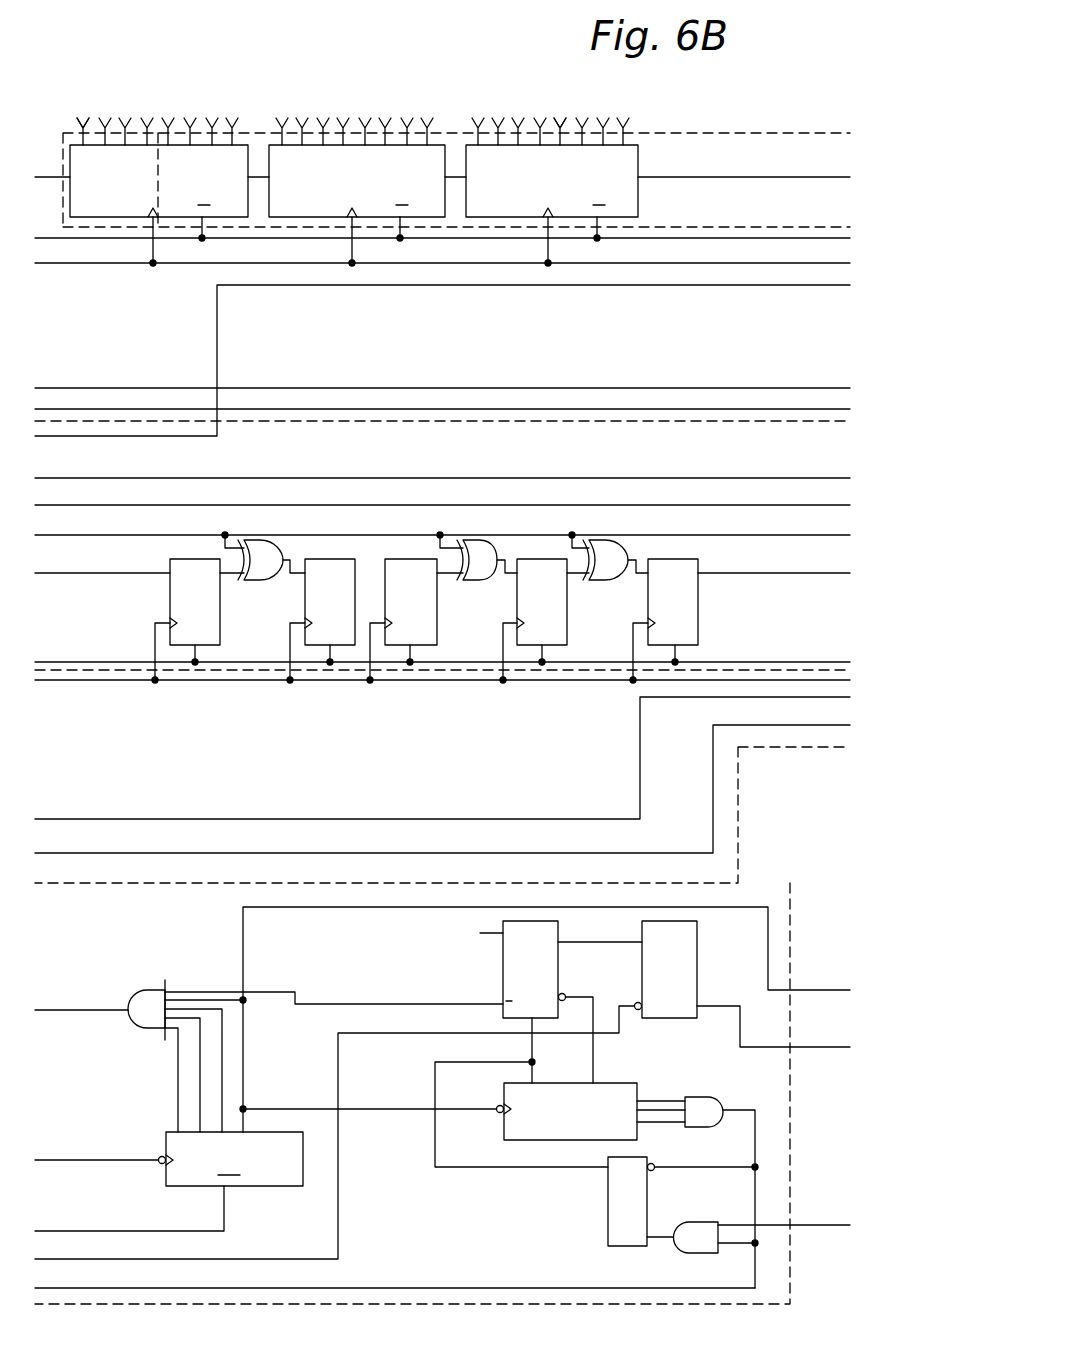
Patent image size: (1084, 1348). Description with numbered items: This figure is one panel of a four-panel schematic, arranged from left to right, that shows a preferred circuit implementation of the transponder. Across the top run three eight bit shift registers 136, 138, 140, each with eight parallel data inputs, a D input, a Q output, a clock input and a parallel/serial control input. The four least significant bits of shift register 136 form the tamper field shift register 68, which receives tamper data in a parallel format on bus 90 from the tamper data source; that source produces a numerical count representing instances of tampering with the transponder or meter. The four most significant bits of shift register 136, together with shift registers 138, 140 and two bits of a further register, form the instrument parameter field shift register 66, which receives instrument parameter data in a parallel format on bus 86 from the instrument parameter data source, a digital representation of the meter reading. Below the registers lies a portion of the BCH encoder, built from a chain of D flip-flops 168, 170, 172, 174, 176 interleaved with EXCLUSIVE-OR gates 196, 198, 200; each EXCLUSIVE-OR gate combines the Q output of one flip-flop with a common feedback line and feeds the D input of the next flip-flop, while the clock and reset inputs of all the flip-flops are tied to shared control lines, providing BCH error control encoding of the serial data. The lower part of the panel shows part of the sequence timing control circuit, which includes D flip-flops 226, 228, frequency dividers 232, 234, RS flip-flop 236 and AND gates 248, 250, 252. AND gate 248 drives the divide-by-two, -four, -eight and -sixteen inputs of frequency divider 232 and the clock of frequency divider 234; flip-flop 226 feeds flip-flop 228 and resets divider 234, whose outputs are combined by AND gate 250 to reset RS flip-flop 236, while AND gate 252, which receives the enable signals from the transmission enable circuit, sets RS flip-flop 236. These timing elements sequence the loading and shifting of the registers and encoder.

The bus 90 is at (136, 108).
The bus 86 is at (570, 108).
The eight bit shift register 136 is at (178, 194).
The eight bit shift register 138 is at (376, 194).
The eight bit shift register 140 is at (574, 194).
The tamper field shift register 68 is at (92, 228).
The instrument parameter field shift register 66 is at (497, 228).
The D flip-flop 168 is at (212, 610).
The D flip-flop 170 is at (347, 610).
The D flip-flop 172 is at (428, 610).
The D flip-flop 174 is at (559, 610).
The D flip-flop 176 is at (690, 610).
The EXCLUSIVE-OR gate 196 is at (262, 556).
The EXCLUSIVE-OR gate 198 is at (477, 556).
The EXCLUSIVE-OR gate 200 is at (607, 556).
The AND gate 248 is at (269, 1056).
The D flip-flop 226 is at (548, 982).
The D flip-flop 228 is at (688, 982).
The frequency divider 234 is at (582, 1128).
The AND gate 250 is at (721, 1192).
The RS flip-flop 236 is at (636, 1185).
The AND gate 252 is at (761, 1237).
The frequency divider 232 is at (264, 1174).